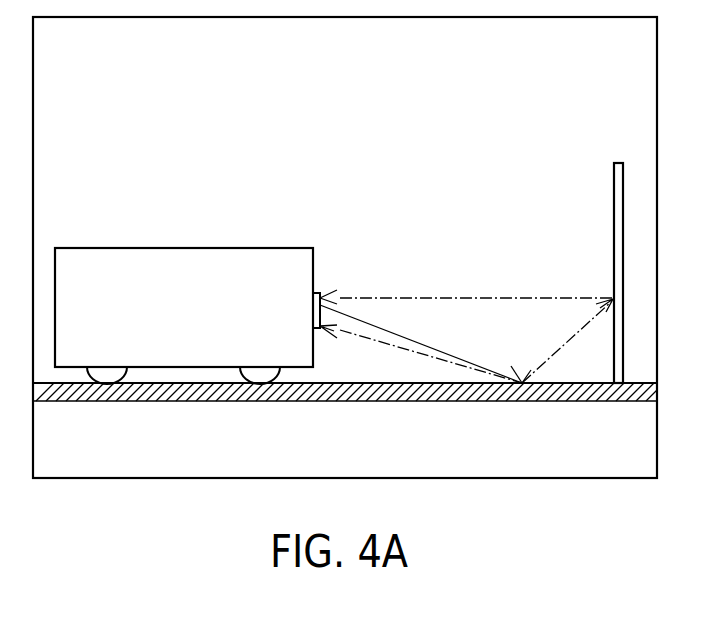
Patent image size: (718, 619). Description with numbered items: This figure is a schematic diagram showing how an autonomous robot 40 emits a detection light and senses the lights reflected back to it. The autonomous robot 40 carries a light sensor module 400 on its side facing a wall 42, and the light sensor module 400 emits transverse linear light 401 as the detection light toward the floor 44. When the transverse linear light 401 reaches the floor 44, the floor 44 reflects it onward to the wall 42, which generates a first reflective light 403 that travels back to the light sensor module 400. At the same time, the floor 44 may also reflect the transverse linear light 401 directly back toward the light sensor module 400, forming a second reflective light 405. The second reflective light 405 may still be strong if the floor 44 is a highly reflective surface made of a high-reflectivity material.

The autonomous robot 40 is at (184, 270).
The light sensor module 400 is at (316, 292).
The transverse linear light 401 is at (415, 342).
The first reflective light 403 is at (486, 297).
The second reflective light 405 is at (433, 358).
The wall 42 is at (614, 197).
The floor 44 is at (638, 383).